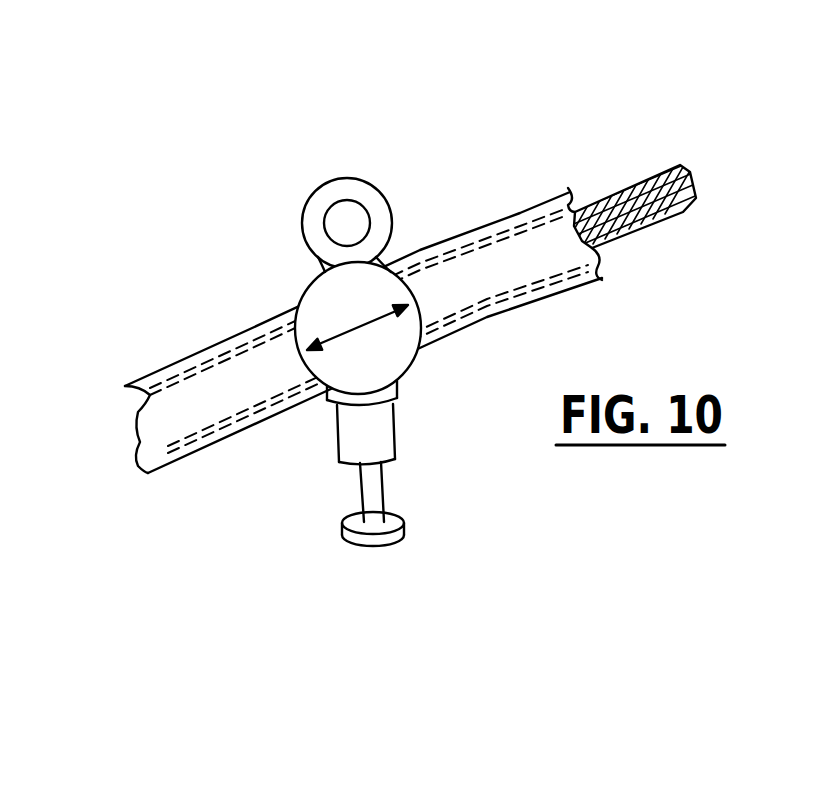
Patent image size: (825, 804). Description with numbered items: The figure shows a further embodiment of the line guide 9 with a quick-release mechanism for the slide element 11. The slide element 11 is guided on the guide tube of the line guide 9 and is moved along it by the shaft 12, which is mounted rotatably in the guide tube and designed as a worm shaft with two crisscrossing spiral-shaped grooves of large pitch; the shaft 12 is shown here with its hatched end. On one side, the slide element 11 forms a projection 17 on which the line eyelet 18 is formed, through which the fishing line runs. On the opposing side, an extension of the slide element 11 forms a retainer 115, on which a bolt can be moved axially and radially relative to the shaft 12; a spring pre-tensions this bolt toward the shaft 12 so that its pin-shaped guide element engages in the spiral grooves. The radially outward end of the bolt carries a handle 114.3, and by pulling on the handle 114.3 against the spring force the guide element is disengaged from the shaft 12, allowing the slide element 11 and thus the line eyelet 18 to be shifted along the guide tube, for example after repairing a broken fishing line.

The line guide 9 is at (257, 260).
The slide element 11 is at (385, 373).
The shaft 12 is at (695, 202).
The projection 17 is at (378, 223).
The line eyelet 18 is at (375, 169).
The retainer 115 is at (352, 443).
The handle 114.3 is at (395, 521).